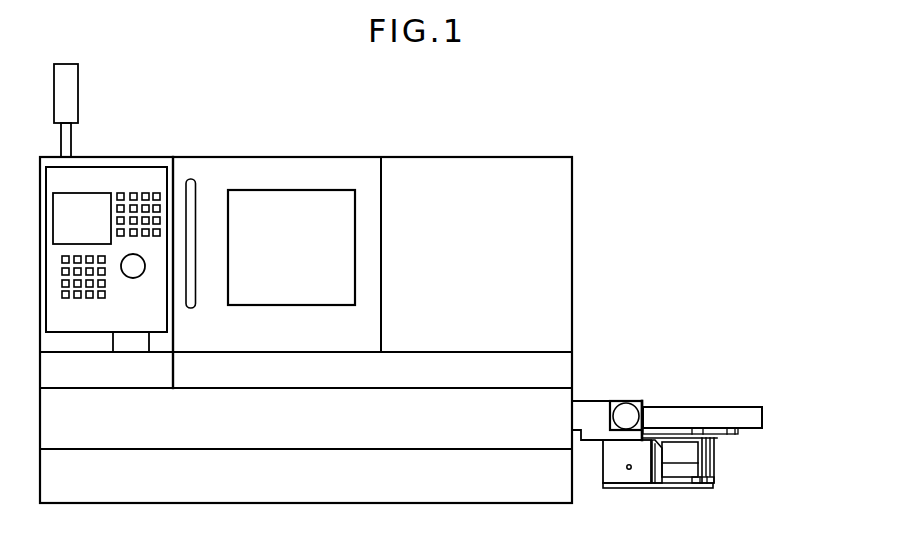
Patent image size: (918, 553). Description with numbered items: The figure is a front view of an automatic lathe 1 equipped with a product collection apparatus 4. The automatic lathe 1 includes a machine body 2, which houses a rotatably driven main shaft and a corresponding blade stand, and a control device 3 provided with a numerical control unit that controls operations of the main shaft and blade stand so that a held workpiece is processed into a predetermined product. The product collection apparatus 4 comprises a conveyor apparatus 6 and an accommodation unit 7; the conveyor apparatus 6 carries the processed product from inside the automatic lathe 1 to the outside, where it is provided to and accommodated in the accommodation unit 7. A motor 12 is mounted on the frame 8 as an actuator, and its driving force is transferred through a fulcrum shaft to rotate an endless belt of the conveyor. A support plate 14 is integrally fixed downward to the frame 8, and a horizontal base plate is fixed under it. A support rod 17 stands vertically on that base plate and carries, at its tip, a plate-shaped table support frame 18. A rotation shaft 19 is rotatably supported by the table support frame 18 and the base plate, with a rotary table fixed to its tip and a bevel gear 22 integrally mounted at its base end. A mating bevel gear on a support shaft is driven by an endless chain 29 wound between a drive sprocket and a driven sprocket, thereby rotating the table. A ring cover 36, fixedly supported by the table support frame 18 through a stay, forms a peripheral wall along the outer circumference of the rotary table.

The automatic lathe 1 is at (367, 140).
The machine body 2 is at (490, 175).
The control device 3 is at (145, 175).
The product collection apparatus 4 is at (695, 426).
The conveyor apparatus 6 is at (601, 386).
The accommodation unit 7 is at (742, 394).
The frame 8 is at (592, 433).
The motor 12 is at (627, 403).
The support plate 14 is at (627, 473).
The support rod 17 is at (655, 474).
The table support frame 18 is at (717, 440).
The rotation shaft 19 is at (713, 472).
The bevel gear 22 is at (702, 481).
The endless chain 29 is at (678, 460).
The ring cover 36 is at (752, 408).